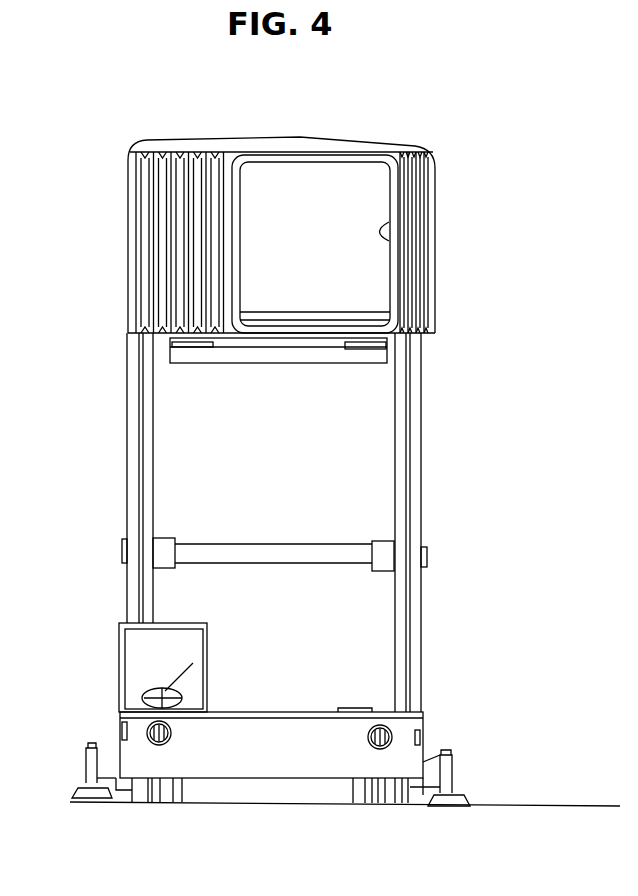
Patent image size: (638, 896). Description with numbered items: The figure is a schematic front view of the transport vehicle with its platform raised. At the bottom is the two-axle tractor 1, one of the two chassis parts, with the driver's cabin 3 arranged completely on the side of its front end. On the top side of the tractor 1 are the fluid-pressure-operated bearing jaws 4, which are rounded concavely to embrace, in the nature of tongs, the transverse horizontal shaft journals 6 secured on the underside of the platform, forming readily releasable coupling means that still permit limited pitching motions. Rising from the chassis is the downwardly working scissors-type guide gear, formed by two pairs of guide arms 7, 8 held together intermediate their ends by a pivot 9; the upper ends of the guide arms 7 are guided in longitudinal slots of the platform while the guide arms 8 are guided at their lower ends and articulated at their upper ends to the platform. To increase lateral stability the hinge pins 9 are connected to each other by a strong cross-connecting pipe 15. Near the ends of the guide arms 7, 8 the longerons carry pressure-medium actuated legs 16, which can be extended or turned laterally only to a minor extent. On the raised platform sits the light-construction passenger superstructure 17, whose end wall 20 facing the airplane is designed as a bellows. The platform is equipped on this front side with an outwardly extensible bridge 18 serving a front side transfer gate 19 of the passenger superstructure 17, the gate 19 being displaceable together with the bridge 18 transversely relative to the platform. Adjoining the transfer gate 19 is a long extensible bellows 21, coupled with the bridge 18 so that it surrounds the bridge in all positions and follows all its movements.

The tractor 1 is at (288, 770).
The driver's cabin 3 is at (138, 673).
The bearing jaws 4 is at (352, 708).
The shaft journals 6 is at (358, 365).
The guide arms 7 is at (398, 446).
The guide arms 8 is at (130, 477).
The pivot 9 is at (122, 553).
The cross-connecting pipe 15 is at (318, 545).
The legs 16 is at (94, 802).
The passenger superstructure 17 is at (333, 147).
The bridge 18 is at (343, 317).
The transfer gate 19 is at (386, 241).
The end wall 20 is at (178, 255).
The extensible bellows 21 is at (264, 157).